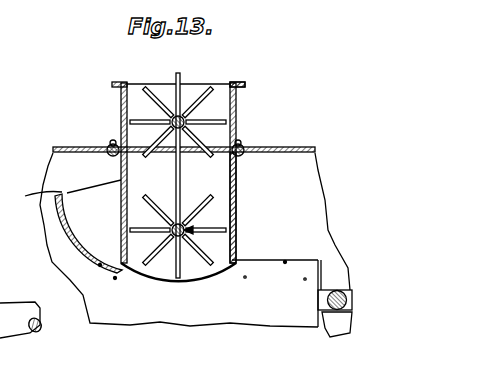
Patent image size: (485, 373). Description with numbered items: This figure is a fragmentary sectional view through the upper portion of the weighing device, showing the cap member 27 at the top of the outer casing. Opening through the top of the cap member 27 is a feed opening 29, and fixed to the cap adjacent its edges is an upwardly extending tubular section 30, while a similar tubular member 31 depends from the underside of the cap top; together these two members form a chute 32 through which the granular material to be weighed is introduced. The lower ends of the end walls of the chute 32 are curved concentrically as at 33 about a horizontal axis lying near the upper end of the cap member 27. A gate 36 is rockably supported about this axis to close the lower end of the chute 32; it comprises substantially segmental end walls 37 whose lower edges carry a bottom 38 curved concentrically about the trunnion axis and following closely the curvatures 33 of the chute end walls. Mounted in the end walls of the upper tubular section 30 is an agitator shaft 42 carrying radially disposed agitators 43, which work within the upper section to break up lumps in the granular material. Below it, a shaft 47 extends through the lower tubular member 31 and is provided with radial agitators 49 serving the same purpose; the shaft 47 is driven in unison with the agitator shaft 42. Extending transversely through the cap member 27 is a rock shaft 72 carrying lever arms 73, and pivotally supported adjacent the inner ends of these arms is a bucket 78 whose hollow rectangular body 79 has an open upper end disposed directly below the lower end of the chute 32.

The cap member 27 is at (303, 147).
The feed opening 29 is at (237, 132).
The upwardly extending tubular section 30 is at (238, 101).
The tubular member 31 is at (237, 237).
The chute 32 is at (191, 95).
The curved lower ends of chute end walls 33 is at (157, 275).
The gate 36 is at (66, 183).
The segmental end walls 37 is at (31, 205).
The bottom 38 is at (72, 228).
The agitator shaft 42 is at (176, 122).
The agitators 43 is at (176, 80).
The shaft 47 is at (192, 229).
The radial agitators 49 is at (178, 212).
The rock shaft 72 is at (350, 305).
The lever arms 73 is at (340, 338).
The bucket 78 is at (300, 272).
The hollow rectangular body 79 is at (192, 322).